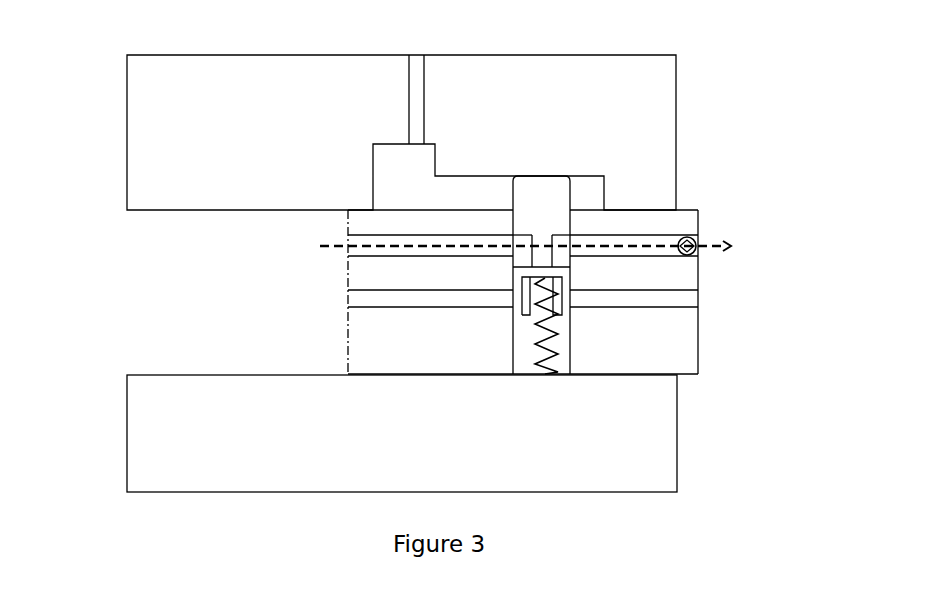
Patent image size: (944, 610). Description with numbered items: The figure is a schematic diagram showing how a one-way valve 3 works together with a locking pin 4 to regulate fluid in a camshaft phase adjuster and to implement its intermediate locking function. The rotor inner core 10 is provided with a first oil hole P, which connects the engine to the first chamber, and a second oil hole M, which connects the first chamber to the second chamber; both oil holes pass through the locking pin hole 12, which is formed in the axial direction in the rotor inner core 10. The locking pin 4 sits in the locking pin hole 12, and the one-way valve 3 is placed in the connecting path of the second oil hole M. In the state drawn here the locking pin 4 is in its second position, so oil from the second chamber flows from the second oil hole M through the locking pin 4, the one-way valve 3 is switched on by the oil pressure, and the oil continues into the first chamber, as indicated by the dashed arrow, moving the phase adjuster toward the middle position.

The one-way valve 3 is at (698, 240).
The locking pin 4 is at (553, 202).
The rotor inner core 10 is at (658, 347).
The locking pin hole 12 is at (562, 352).
The second oil hole M is at (355, 247).
The first oil hole P is at (355, 300).